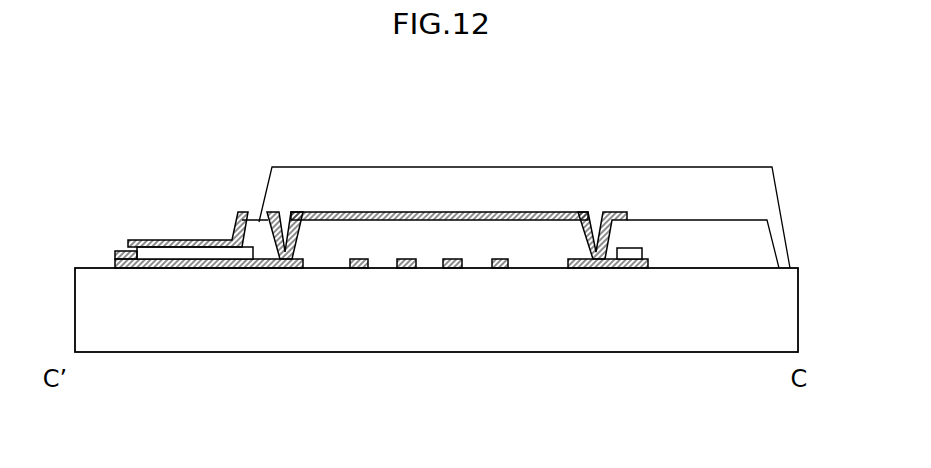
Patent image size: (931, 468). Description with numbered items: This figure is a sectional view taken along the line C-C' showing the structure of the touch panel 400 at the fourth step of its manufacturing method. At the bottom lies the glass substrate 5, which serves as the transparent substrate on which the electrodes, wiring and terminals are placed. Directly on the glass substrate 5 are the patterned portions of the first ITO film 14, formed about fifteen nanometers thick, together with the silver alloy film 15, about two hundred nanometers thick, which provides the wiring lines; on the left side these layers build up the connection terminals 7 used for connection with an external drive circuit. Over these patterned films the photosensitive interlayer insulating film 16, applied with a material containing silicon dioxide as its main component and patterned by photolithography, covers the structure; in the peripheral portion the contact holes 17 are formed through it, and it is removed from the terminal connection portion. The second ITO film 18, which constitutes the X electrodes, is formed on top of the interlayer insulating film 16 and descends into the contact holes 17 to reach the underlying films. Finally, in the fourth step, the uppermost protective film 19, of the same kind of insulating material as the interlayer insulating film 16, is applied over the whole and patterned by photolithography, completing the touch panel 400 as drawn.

The glass substrate 5 is at (418, 318).
The touch panel 400 is at (508, 363).
The connection terminals 7 is at (168, 240).
The contact holes 17 is at (287, 215).
The second ITO film 18 is at (462, 220).
The interlayer insulating film 16 is at (413, 233).
The first ITO film 14 is at (358, 258).
The silver alloy film 15 is at (630, 250).
The uppermost protective film 19 is at (760, 190).